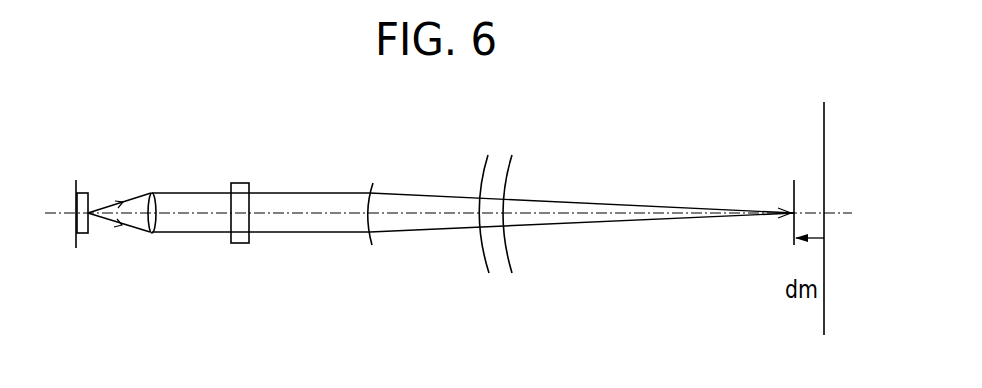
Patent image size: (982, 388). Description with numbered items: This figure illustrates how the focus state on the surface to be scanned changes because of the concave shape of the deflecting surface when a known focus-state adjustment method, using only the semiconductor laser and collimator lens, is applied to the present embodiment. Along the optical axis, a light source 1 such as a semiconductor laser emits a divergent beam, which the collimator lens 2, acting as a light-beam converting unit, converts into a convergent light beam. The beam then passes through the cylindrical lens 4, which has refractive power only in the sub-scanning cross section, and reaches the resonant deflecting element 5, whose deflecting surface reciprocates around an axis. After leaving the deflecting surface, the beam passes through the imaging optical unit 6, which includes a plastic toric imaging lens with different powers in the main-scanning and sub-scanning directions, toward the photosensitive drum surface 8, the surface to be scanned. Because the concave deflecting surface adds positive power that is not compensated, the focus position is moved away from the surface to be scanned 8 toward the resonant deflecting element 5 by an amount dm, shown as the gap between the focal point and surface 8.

The light source 1 is at (77, 243).
The collimator lens 2 is at (152, 237).
The cylindrical lens 4 is at (238, 240).
The resonant deflecting element 5 is at (368, 243).
The imaging optical unit 6 is at (493, 262).
The photosensitive drum surface 8 is at (825, 275).